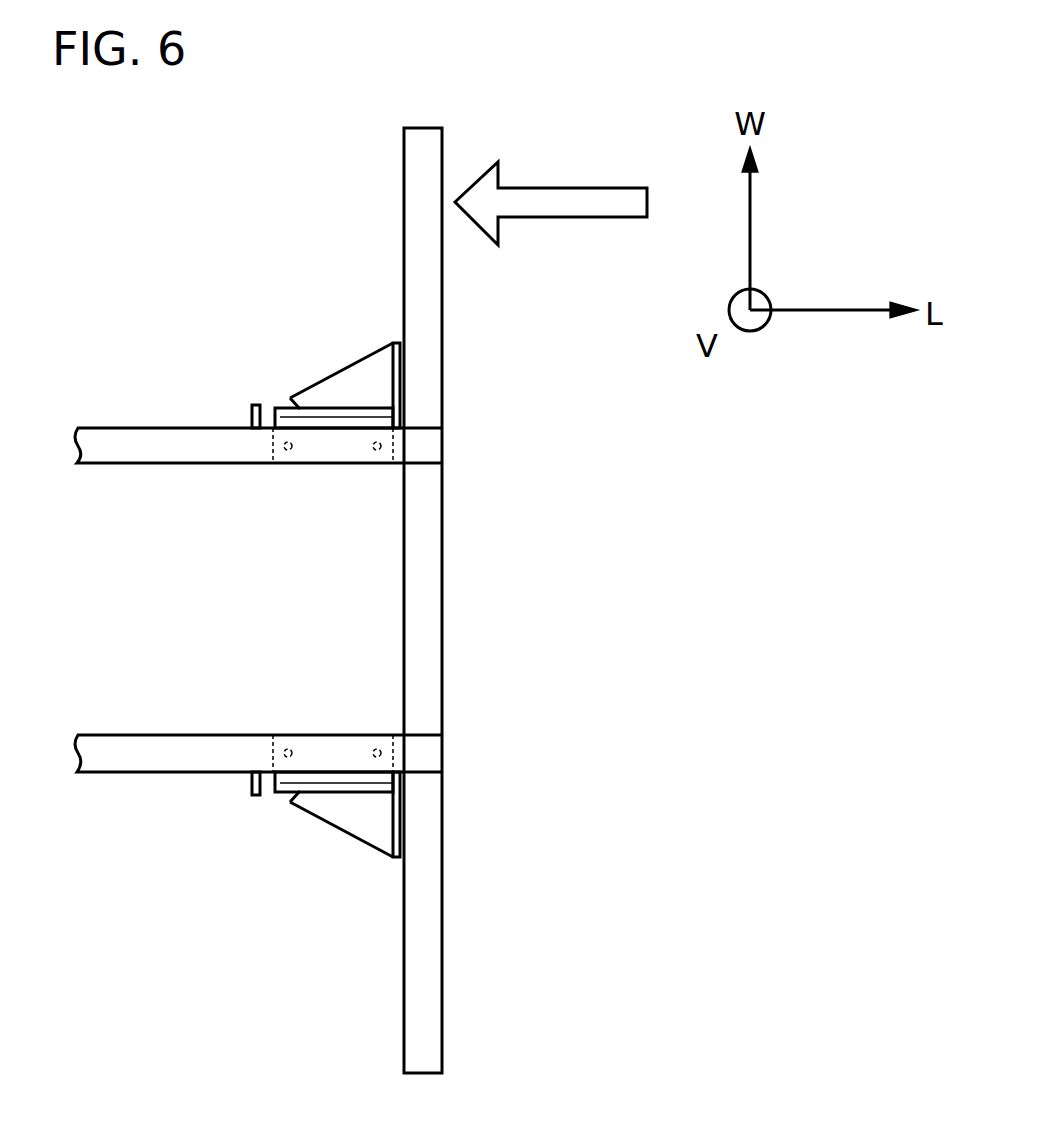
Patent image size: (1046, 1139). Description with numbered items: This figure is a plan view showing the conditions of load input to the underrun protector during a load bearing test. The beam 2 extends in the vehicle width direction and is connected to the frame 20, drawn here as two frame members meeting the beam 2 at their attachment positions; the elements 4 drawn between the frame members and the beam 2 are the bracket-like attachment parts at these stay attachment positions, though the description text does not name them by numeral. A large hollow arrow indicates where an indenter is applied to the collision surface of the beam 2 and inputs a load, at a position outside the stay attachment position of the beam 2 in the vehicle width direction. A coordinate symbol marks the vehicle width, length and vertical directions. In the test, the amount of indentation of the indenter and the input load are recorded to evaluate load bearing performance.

The beam 2 is at (423, 318).
The bracket 4 is at (258, 405).
The frame 20 is at (150, 465).